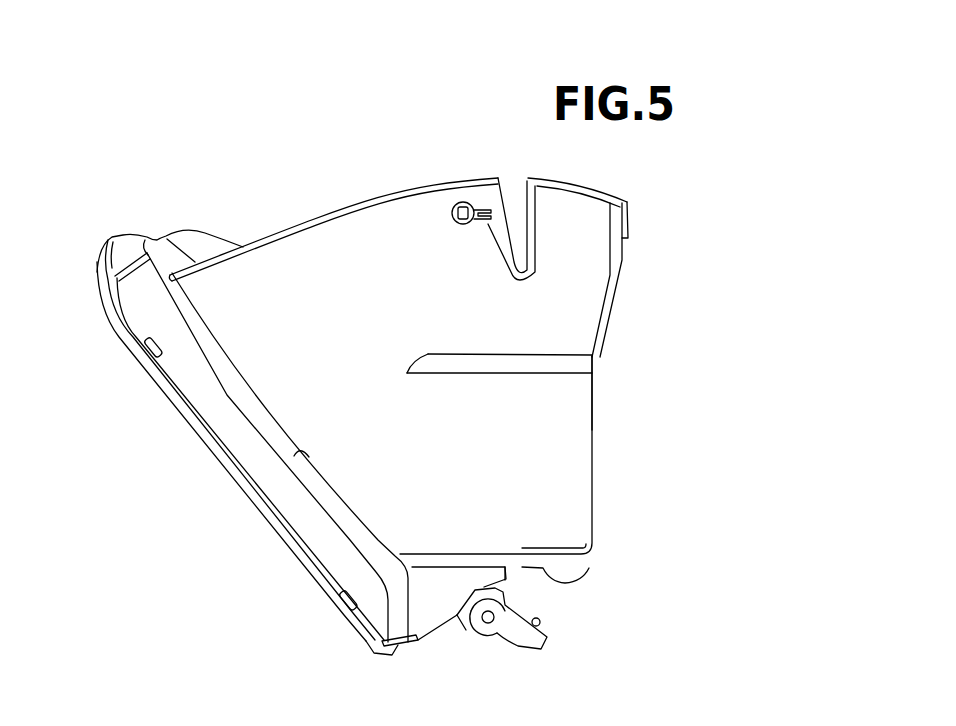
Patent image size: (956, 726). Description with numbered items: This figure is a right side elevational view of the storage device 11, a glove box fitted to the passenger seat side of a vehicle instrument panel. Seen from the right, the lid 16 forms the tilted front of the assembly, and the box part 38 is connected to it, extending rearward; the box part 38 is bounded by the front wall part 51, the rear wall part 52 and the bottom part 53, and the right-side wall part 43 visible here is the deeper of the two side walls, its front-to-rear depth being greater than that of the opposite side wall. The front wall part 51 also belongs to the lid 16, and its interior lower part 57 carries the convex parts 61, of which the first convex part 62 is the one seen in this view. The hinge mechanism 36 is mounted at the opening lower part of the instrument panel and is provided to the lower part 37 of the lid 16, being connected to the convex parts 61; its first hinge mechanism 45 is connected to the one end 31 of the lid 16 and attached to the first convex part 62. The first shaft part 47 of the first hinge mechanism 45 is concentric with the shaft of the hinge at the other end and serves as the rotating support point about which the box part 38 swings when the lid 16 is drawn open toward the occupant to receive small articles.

The storage device 11 is at (211, 175).
The lid 16 is at (234, 468).
The one end 31 is at (235, 487).
The hinge mechanism 36 is at (570, 633).
The lower part 37 is at (408, 654).
The box part 38 is at (387, 172).
The right-side wall part 43 is at (543, 325).
The first hinge mechanism 45 is at (517, 645).
The first shaft part 47 is at (493, 626).
The front wall part 51 is at (297, 462).
The rear wall part 52 is at (592, 425).
The bottom part 53 is at (592, 570).
The interior lower part 57 is at (384, 645).
The convex parts 61 is at (477, 637).
The first convex part 62 is at (463, 623).